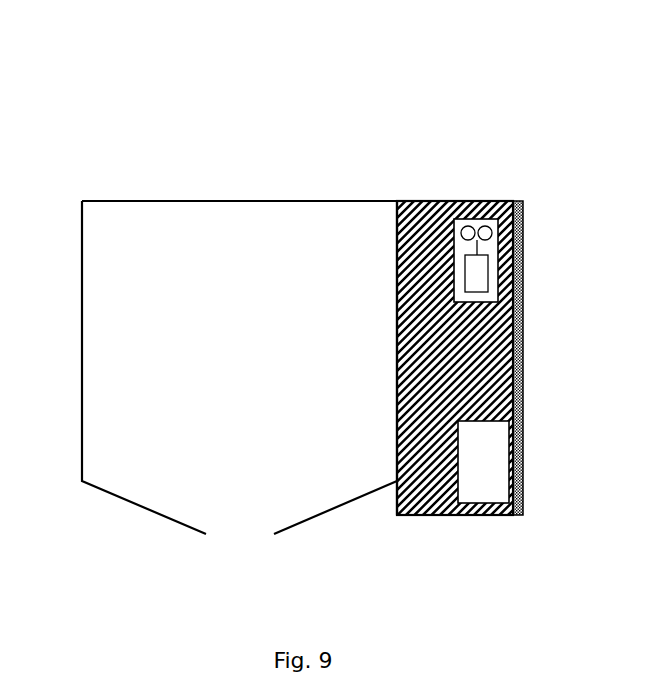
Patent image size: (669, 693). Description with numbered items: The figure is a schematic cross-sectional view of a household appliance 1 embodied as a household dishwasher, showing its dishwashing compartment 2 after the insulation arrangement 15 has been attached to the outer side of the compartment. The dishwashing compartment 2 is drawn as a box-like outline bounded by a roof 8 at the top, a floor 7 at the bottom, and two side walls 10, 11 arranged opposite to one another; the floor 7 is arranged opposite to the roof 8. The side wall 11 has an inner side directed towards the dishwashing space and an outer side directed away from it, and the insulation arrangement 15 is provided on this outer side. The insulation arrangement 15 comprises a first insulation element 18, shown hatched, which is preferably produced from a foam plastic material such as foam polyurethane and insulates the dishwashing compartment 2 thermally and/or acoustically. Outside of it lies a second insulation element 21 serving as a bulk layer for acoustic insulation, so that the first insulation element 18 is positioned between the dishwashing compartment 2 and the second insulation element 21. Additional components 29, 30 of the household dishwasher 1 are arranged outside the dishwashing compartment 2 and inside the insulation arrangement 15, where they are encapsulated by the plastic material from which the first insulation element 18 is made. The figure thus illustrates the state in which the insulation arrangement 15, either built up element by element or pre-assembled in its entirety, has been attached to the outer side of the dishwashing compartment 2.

The household appliance 1 is at (236, 85).
The dishwashing compartment 2 is at (156, 189).
The floor 7 is at (337, 508).
The roof 8 is at (302, 200).
The side wall 10 is at (82, 311).
The side wall 11 is at (397, 290).
The insulation arrangement 15 is at (533, 363).
The first insulation element 18 is at (423, 200).
The second insulation element 21 is at (523, 278).
The additional component 29 is at (523, 233).
The additional component 30 is at (487, 515).